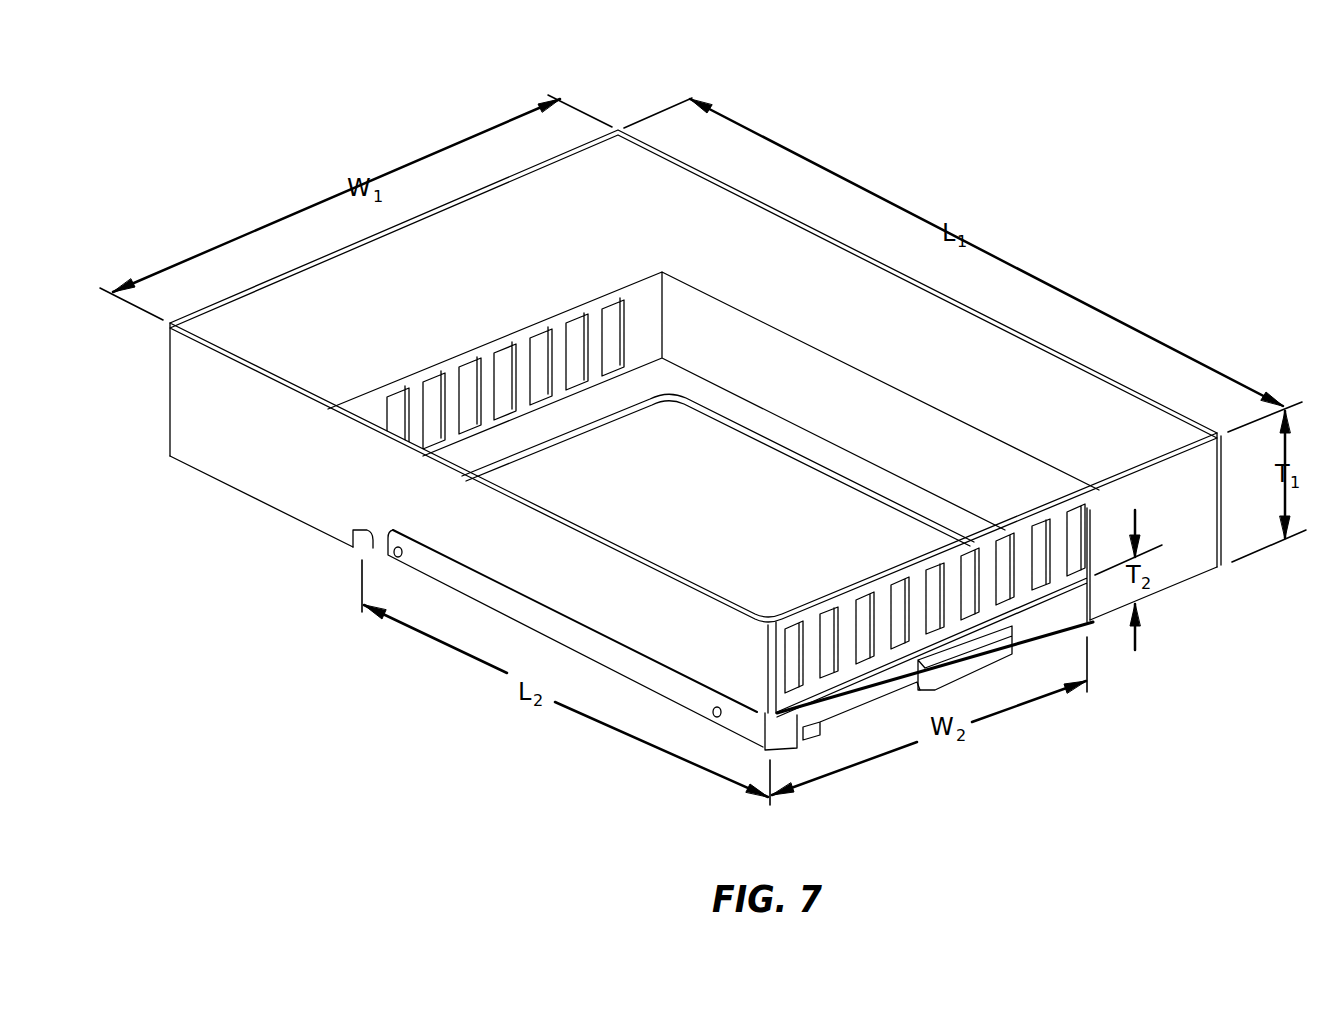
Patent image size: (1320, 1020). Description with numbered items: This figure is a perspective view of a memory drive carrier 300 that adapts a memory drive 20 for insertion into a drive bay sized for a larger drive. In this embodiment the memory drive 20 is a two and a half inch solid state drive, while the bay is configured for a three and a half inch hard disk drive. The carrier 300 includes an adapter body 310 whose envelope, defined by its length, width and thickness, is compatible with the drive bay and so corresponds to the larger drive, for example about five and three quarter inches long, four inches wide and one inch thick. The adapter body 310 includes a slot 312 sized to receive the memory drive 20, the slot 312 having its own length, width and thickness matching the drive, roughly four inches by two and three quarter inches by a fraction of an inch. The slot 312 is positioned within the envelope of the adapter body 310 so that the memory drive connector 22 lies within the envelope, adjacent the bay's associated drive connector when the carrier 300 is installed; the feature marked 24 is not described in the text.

The memory drive carrier 300 is at (1068, 146).
The adapter body 310 is at (768, 228).
The slot 312 is at (507, 602).
The memory drive 20 is at (647, 673).
The memory drive connector 22 is at (865, 690).
The pin 24 is at (372, 546).